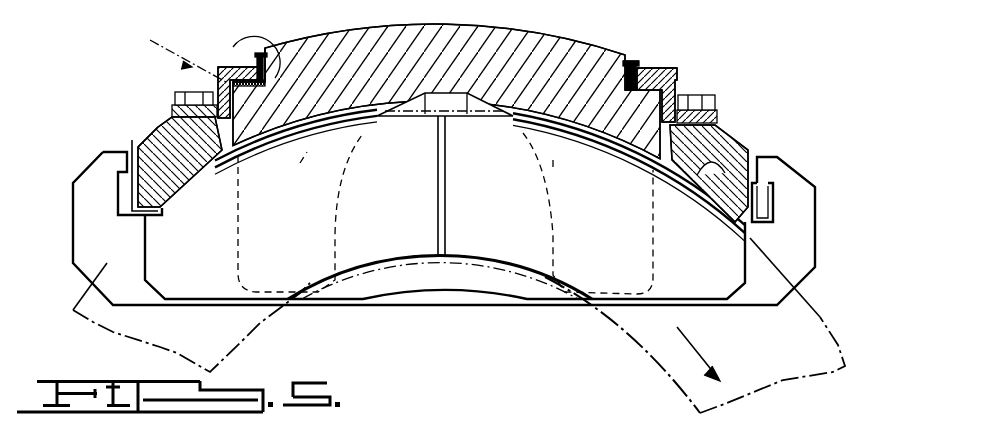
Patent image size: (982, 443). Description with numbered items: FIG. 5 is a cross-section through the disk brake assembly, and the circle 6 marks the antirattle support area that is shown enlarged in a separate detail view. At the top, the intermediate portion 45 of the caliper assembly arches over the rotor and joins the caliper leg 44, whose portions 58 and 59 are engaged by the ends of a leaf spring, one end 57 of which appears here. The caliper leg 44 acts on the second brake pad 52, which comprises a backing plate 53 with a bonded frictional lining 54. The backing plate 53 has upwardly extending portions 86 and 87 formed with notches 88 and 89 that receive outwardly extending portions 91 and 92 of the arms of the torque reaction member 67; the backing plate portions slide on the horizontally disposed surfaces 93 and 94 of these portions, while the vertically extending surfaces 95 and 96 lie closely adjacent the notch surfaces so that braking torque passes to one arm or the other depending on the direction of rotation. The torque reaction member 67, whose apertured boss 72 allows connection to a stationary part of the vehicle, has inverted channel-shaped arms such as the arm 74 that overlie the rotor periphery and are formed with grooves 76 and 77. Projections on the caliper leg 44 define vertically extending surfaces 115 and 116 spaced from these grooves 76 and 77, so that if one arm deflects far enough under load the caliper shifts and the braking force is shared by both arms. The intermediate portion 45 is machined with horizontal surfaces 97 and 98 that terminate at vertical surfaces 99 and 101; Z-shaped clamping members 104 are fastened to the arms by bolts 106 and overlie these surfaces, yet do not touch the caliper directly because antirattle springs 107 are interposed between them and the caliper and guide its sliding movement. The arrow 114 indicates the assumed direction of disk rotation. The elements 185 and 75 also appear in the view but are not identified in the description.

The circle 6 is at (168, 56).
The intermediate portion 45 is at (446, 91).
The machined vertically extending surface 101 is at (268, 52).
The antirattle springs 107 is at (252, 58).
The bracket bar 185 is at (182, 72).
The bolts 106 is at (168, 138).
The arm 74 is at (174, 104).
The right nut 75 is at (720, 121).
The horizontally disposed surface 94 is at (168, 140).
The backing plate 53 is at (98, 154).
The upwardly extending portion 87 is at (90, 166).
The brake pad 52 is at (68, 218).
The vertically extending surface 96 is at (118, 196).
The outwardly extending portion 92 is at (162, 212).
The notch 89 is at (140, 218).
The frictional lining 54 is at (137, 249).
The groove 77 is at (180, 162).
The machined horizontal surface 98 is at (272, 98).
The vertically extending surface 116 is at (253, 145).
The vertically extending surface 115 is at (650, 162).
The portion of caliper leg 59 is at (338, 206).
The caliper leg 44 is at (553, 188).
The portion of caliper leg 58 is at (553, 228).
The machined horizontal surface 97 is at (640, 89).
The apertured boss 72 is at (634, 53).
The machined vertically extending surface 99 is at (655, 68).
The clamping member 104 is at (678, 82).
The groove 76 is at (709, 173).
The torque reaction member 67 is at (758, 138).
The upwardly extending portion 86 is at (787, 158).
The horizontally disposed surface 93 is at (775, 182).
The vertically extending surface 95 is at (774, 196).
The notch 88 is at (774, 213).
The outwardly extending portion 91 is at (763, 223).
The spaced end of leaf spring 57 is at (822, 308).
The arrow 114 is at (687, 340).